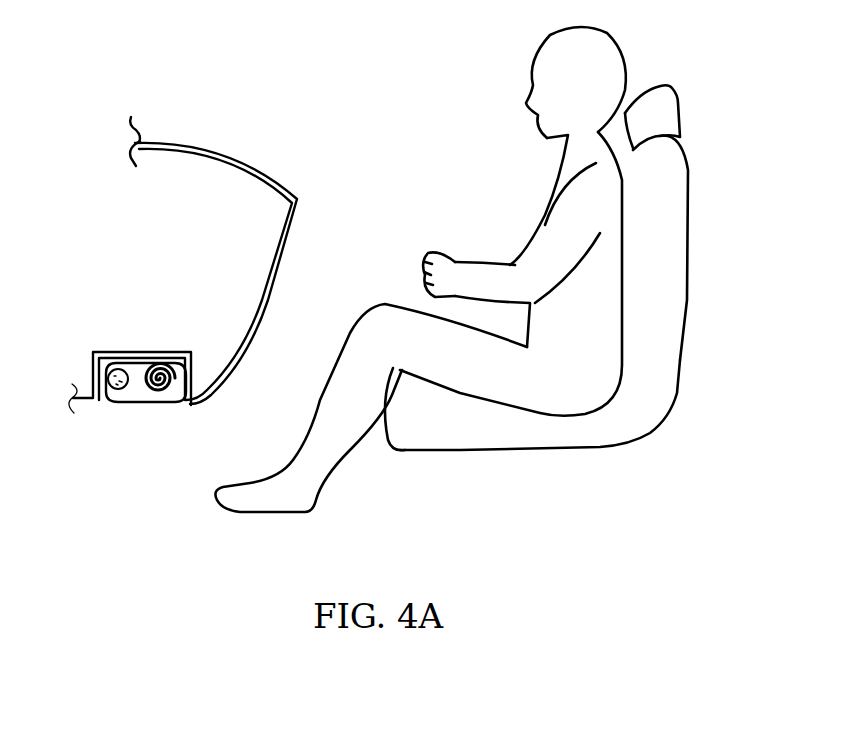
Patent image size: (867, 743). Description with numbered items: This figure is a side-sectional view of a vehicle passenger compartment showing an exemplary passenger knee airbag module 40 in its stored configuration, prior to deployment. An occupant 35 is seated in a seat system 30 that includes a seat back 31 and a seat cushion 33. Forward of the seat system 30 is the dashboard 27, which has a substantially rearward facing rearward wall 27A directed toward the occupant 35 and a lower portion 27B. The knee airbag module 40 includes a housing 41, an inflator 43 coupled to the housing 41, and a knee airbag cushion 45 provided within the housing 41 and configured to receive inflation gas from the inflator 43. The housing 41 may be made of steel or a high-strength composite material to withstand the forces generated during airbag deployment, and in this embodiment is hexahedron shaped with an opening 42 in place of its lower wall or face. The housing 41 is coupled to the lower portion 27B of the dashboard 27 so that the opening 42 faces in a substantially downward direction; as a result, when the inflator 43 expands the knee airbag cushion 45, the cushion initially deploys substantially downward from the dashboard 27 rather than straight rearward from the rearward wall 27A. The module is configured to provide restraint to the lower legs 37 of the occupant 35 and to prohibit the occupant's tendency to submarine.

The dashboard 27 is at (300, 246).
The rearward wall 27A is at (265, 284).
The lower portion 27B is at (121, 352).
The seat system 30 is at (569, 286).
The seat back 31 is at (661, 297).
The seat cushion 33 is at (477, 438).
The occupant 35 is at (548, 68).
The lower legs 37 is at (302, 398).
The knee airbag module 40 is at (113, 418).
The housing 41 is at (118, 355).
The opening 42 is at (153, 418).
The inflator 43 is at (113, 375).
The knee airbag cushion 45 is at (163, 364).